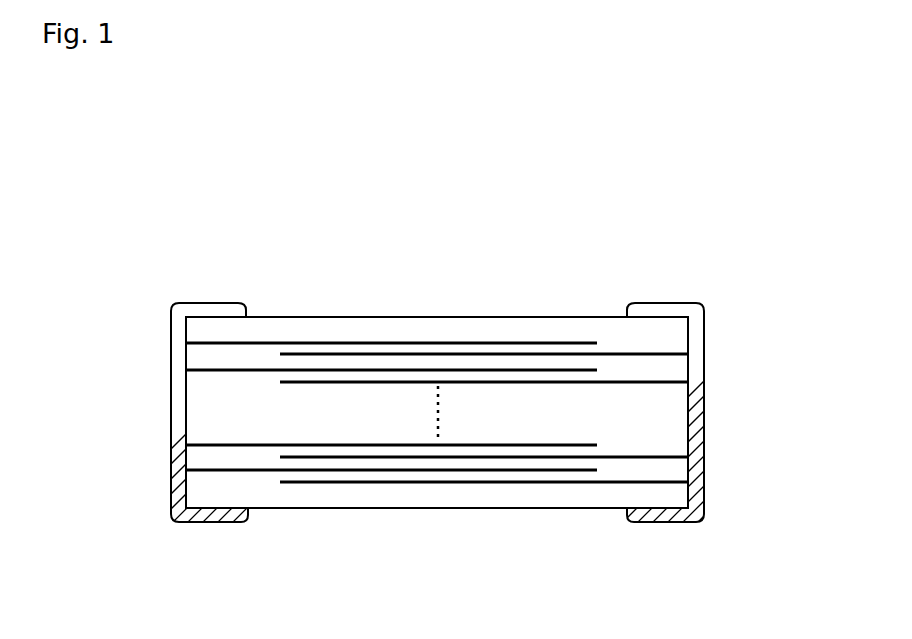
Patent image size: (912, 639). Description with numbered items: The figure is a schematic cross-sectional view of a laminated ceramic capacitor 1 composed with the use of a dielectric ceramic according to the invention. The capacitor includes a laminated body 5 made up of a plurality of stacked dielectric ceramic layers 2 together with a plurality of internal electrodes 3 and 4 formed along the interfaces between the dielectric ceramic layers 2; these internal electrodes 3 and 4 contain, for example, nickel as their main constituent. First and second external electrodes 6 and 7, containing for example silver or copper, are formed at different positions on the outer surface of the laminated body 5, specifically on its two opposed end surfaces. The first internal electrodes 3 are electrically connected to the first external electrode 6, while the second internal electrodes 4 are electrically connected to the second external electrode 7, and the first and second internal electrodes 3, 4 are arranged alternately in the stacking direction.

The laminated ceramic capacitor 1 is at (460, 403).
The dielectric ceramic layers 2 is at (463, 370).
The first internal electrodes 3 is at (350, 370).
The second internal electrodes 4 is at (527, 457).
The laminated body 5 is at (566, 316).
The first external electrode 6 is at (180, 412).
The second external electrode 7 is at (702, 410).